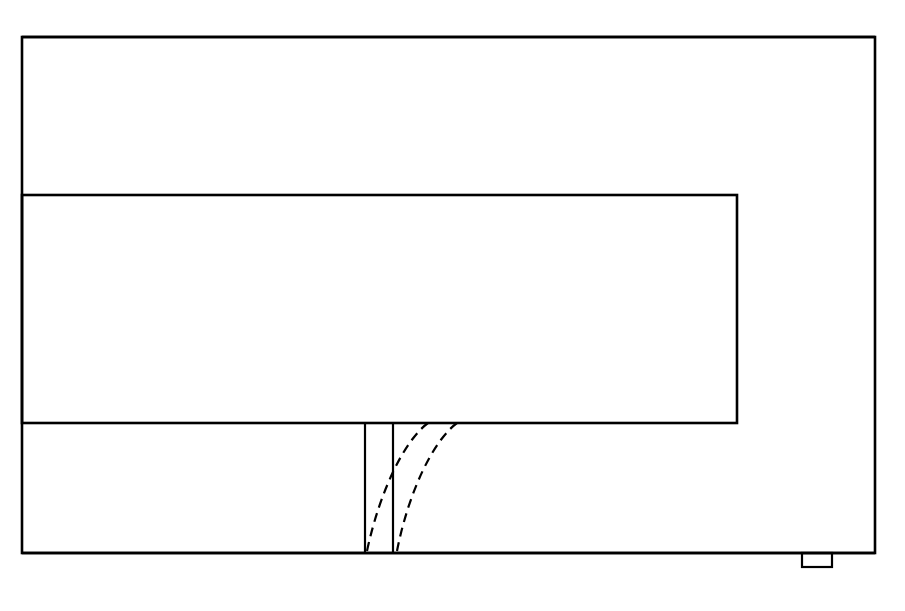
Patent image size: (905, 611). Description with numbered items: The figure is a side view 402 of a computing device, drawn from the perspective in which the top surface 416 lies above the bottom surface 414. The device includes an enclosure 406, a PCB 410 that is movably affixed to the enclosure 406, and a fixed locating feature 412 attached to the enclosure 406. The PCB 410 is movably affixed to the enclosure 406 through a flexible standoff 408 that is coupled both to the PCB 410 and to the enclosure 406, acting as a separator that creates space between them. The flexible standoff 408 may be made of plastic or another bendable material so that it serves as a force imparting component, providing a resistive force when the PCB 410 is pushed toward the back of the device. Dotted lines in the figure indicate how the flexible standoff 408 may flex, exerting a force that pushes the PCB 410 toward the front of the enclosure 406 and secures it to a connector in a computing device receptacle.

The side view 402 is at (517, 553).
The enclosure 406 is at (508, 65).
The flexible standoff 408 is at (383, 445).
The PCB 410 is at (418, 321).
The fixed locating feature 412 is at (817, 553).
The bottom surface 414 is at (193, 547).
The top surface 416 is at (164, 30).